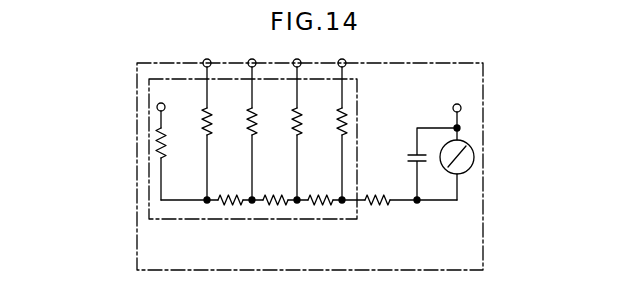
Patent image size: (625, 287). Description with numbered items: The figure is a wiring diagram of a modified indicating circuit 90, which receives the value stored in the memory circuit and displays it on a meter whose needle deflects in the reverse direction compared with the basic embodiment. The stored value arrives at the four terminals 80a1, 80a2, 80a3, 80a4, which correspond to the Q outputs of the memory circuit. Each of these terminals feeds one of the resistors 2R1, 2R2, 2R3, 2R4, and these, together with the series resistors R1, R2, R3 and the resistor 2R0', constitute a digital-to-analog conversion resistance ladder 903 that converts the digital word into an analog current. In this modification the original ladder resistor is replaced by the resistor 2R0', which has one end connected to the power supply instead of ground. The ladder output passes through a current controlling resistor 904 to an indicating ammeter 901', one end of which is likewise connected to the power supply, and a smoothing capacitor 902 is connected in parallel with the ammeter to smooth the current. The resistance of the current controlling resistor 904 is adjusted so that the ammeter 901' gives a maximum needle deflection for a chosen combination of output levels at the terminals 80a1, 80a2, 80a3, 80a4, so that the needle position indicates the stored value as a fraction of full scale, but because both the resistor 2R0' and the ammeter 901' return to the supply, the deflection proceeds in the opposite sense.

The indicating circuit 90 is at (484, 192).
The digital-to-analog conversion resistance ladder 903 is at (227, 221).
The output terminal of memory circuit 80a1 is at (204, 59).
The output terminal of memory circuit 80a2 is at (249, 59).
The output terminal of memory circuit 80a3 is at (294, 59).
The output terminal of memory circuit 80a4 is at (340, 59).
The resistor 2R1 is at (198, 125).
The resistor 2R2 is at (243, 125).
The resistor 2R3 is at (288, 125).
The resistor 2R4 is at (333, 125).
The resistor 2R0' is at (137, 142).
The resistor R1 is at (235, 206).
The resistor R2 is at (281, 206).
The resistor R3 is at (326, 206).
The current controlling resistor 904 is at (381, 206).
The smoothing capacitor 902 is at (407, 158).
The indicating ammeter 901' is at (487, 142).